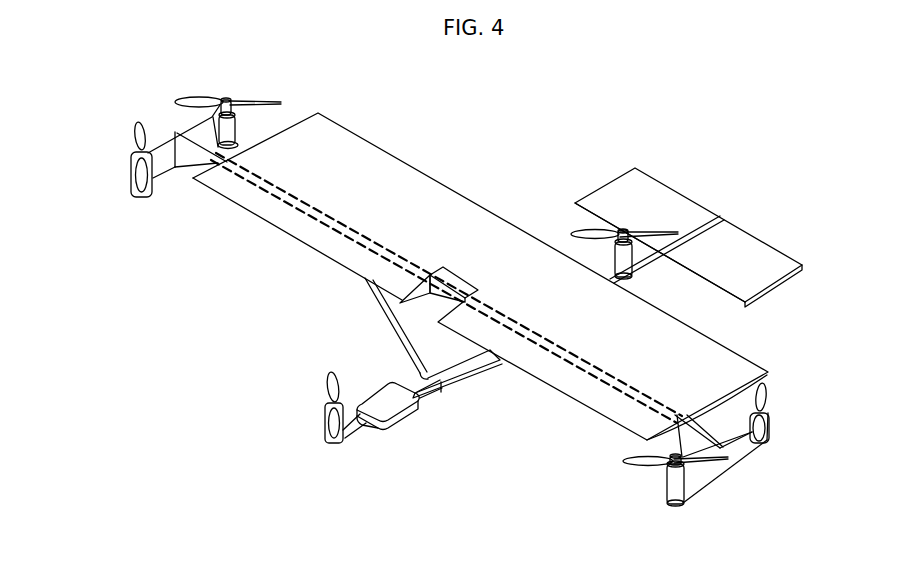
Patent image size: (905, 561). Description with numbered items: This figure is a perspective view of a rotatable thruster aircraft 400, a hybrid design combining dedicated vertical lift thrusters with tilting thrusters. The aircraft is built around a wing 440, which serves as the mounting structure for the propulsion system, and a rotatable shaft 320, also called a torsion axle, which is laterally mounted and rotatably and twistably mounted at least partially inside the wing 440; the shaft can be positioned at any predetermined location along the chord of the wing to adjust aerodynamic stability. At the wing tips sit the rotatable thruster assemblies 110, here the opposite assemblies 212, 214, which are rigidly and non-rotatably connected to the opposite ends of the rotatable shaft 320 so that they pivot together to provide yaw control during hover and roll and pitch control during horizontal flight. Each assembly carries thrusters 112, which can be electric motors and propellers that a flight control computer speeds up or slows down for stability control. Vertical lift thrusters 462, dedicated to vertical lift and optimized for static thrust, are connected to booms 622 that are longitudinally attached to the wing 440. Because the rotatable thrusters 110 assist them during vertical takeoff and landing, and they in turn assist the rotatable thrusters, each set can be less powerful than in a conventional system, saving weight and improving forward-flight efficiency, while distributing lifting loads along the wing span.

The rotatable thruster aircraft 400 is at (214, 321).
The wing 440 is at (411, 161).
The rotatable shaft 320 is at (388, 253).
The rotatable thruster assembly 110 is at (122, 216).
The thruster 112 is at (131, 128).
The rotatable thruster assembly 212 is at (272, 86).
The rotatable thruster assembly 214 is at (640, 506).
The vertical lift thruster 462 is at (333, 368).
The boom 622 is at (653, 262).